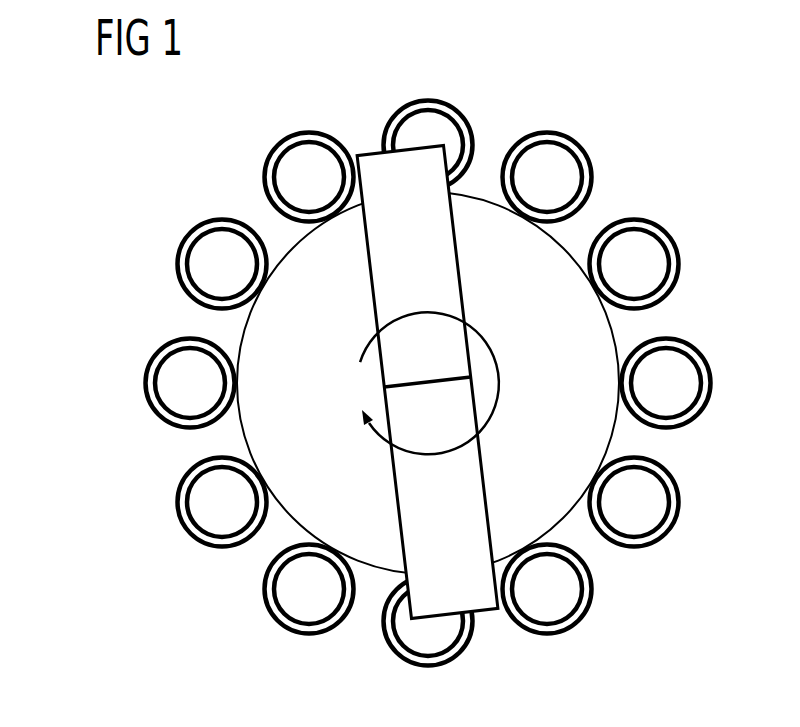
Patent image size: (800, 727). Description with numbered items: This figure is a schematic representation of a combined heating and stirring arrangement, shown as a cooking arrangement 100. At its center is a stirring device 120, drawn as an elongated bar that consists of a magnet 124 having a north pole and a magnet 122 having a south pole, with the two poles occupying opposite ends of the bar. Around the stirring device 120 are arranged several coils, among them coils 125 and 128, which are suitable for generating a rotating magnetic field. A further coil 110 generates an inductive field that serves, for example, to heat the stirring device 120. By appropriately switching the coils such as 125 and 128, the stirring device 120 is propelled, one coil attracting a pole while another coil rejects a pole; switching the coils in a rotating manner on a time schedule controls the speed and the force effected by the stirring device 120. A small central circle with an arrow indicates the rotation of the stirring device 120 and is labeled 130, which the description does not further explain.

The cooking arrangement 100 is at (467, 377).
The coil 110 is at (313, 290).
The stirring device 120 is at (437, 377).
The magnet having a south pole 122 is at (482, 590).
The magnet having a north pole 124 is at (393, 175).
The coil 125 is at (575, 140).
The coil 128 is at (260, 598).
The rotation axis / torque direction M 130 is at (499, 378).